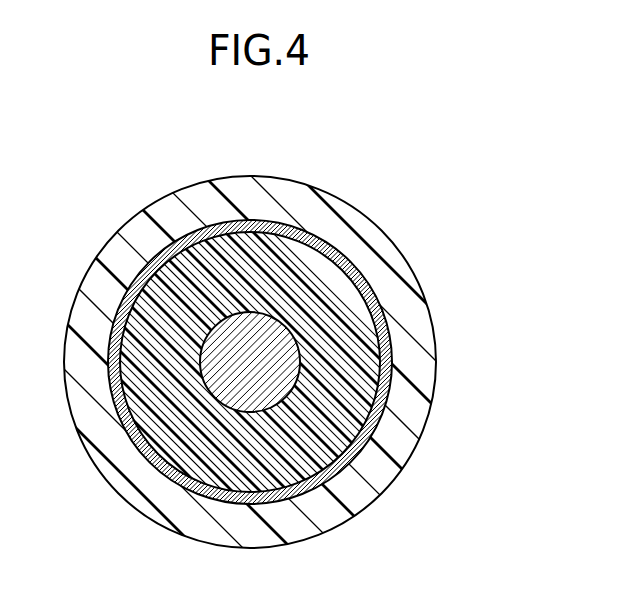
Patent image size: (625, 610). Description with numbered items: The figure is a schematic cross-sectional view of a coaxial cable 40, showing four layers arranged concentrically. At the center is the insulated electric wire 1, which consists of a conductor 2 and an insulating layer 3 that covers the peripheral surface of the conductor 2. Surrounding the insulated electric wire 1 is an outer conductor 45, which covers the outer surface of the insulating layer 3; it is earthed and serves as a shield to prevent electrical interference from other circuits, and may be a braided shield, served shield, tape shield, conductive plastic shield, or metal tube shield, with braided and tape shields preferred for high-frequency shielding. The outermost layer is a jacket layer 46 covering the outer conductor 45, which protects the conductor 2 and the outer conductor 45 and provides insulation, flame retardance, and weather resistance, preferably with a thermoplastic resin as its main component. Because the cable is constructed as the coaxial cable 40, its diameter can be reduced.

The coaxial cable 40 is at (413, 172).
The jacket layer 46 is at (377, 259).
The outer conductor 45 is at (367, 285).
The insulating layer 3 is at (350, 355).
The conductor 2 is at (255, 383).
The insulated electric wire 1 is at (503, 363).